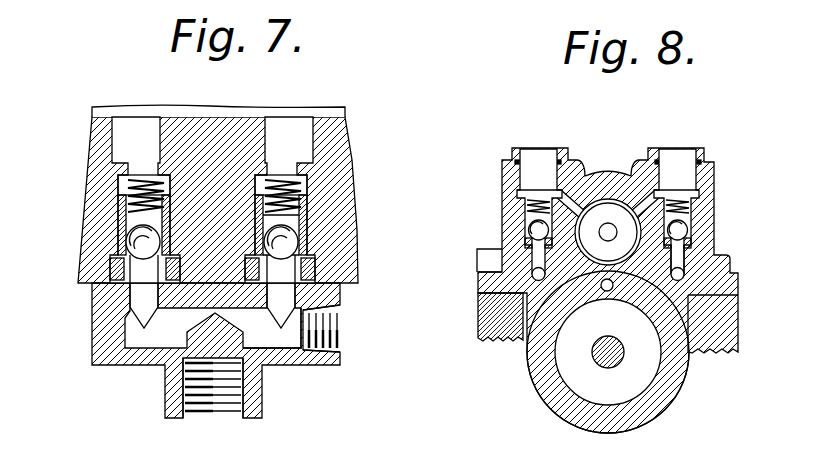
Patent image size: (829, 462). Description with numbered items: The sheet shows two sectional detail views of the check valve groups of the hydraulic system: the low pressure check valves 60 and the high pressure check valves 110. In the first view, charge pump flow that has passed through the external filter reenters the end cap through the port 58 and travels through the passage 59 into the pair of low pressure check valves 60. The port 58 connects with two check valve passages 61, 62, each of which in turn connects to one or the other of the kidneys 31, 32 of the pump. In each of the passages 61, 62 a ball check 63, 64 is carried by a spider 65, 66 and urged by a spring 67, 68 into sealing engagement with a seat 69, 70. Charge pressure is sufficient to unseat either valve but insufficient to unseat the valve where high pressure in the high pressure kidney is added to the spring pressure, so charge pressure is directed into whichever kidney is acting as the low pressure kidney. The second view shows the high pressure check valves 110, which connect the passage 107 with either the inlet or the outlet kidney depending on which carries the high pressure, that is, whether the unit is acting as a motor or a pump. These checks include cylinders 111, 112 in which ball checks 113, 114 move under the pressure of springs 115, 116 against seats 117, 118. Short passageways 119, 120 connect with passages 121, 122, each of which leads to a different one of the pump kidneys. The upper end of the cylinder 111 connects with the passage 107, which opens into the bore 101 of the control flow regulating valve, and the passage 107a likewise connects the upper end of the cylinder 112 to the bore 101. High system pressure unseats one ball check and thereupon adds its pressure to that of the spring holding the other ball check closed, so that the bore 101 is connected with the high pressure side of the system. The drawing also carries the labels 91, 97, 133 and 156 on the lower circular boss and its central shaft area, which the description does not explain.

In FIG. 7, the kidney 31 is at (124, 141).
In FIG. 7, the kidney 32 is at (292, 143).
In FIG. 7, the port 58 is at (204, 404).
In FIG. 7, the passage 59 is at (278, 345).
In FIG. 7, the low pressure check valves 60 is at (78, 336).
In FIG. 7, the check valve passage 61 is at (137, 277).
In FIG. 7, the check valve passage 62 is at (335, 300).
In FIG. 7, the ball check 63 is at (134, 240).
In FIG. 7, the ball check 64 is at (332, 214).
In FIG. 7, the spider 65 is at (122, 211).
In FIG. 7, the spider 66 is at (306, 197).
In FIG. 7, the spring 67 is at (120, 181).
In FIG. 7, the spring 68 is at (351, 170).
In FIG. 7, the seat 69 is at (116, 256).
In FIG. 7, the seat 70 is at (357, 240).
In FIG. 8, the cylindrical boss 91 is at (562, 378).
In FIG. 8, the passage hole 97 is at (606, 291).
In FIG. 8, the bore 101 is at (623, 174).
In FIG. 8, the passage 107 is at (576, 188).
In FIG. 8, the passage 107a is at (631, 186).
In FIG. 8, the high pressure check valves 110 is at (695, 400).
In FIG. 8, the cylinder 111 is at (517, 210).
In FIG. 8, the cylinder 112 is at (692, 205).
In FIG. 8, the ball check 113 is at (531, 230).
In FIG. 8, the ball check 114 is at (692, 222).
In FIG. 8, the spring 115 is at (520, 197).
In FIG. 8, the spring 116 is at (697, 193).
In FIG. 8, the seat 117 is at (497, 253).
In FIG. 8, the seat 118 is at (693, 247).
In FIG. 8, the short passageway 119 is at (495, 281).
In FIG. 8, the short passageway 120 is at (676, 260).
In FIG. 8, the passage 121 is at (495, 302).
In FIG. 8, the passage 122 is at (677, 274).
In FIG. 8, the shaft bore 133 is at (606, 370).
In FIG. 8, the shaft 156 is at (628, 258).